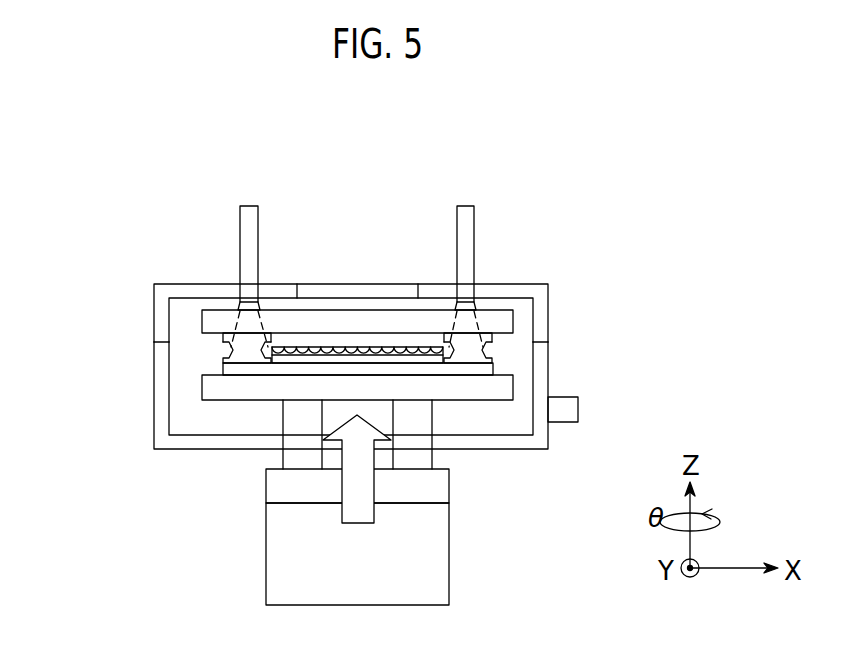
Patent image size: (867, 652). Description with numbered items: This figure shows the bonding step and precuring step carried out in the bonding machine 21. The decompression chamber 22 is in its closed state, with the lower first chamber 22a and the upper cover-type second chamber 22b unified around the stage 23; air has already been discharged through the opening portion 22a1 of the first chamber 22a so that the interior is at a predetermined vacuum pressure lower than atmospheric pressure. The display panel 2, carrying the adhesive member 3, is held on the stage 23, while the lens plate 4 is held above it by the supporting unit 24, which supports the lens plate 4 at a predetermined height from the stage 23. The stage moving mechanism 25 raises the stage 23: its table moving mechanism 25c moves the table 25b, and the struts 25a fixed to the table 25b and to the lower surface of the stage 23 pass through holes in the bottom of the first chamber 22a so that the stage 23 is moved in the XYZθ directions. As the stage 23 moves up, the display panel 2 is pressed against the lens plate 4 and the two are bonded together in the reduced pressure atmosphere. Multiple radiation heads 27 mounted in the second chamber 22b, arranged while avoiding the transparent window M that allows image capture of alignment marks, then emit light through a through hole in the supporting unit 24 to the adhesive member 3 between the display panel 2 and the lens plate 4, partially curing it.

The bonding machine 21 is at (589, 178).
The decompression chamber 22 is at (140, 362).
The first chamber 22a is at (153, 408).
The second chamber 22b is at (153, 321).
The opening portion 22a1 is at (579, 410).
The radiation heads 27 is at (240, 222).
The supporting unit 24 is at (320, 318).
The lens plate 4 is at (490, 342).
The adhesive member 3 is at (245, 355).
The window M is at (412, 297).
The display panel 2 is at (490, 368).
The stage 23 is at (507, 395).
The stage moving mechanism 25 is at (263, 553).
The struts 25a is at (283, 458).
The table 25b is at (440, 495).
The table moving mechanism 25c is at (445, 582).